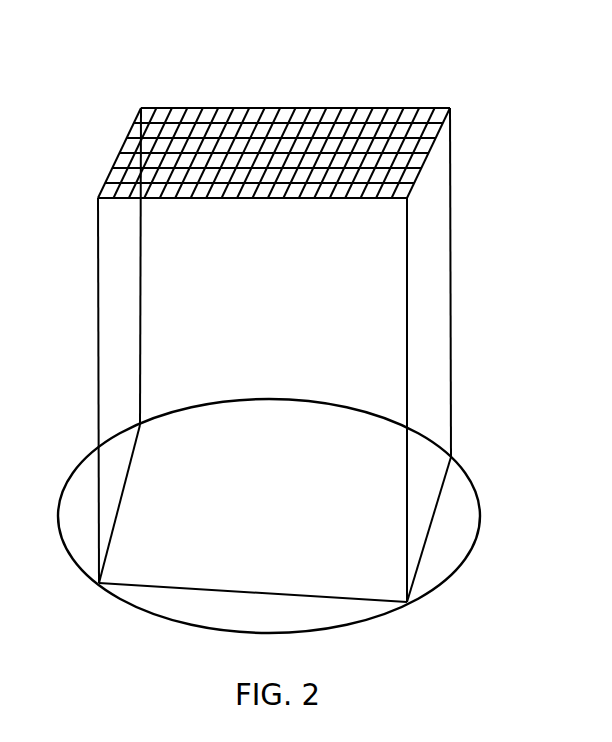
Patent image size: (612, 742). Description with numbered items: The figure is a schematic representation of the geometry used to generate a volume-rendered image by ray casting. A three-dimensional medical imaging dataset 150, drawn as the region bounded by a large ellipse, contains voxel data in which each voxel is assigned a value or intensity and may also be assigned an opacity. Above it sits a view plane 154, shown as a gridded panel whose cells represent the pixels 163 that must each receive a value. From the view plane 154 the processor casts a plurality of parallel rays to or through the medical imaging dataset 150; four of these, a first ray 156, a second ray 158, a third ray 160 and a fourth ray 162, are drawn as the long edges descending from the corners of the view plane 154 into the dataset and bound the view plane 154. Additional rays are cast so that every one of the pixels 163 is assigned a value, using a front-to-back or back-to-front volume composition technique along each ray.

The 3D medical imaging dataset 150 is at (462, 546).
The view plane 154 is at (433, 143).
The first ray 156 is at (141, 282).
The second ray 158 is at (98, 347).
The third ray 160 is at (451, 282).
The fourth ray 162 is at (406, 323).
The pixels 163 is at (180, 122).